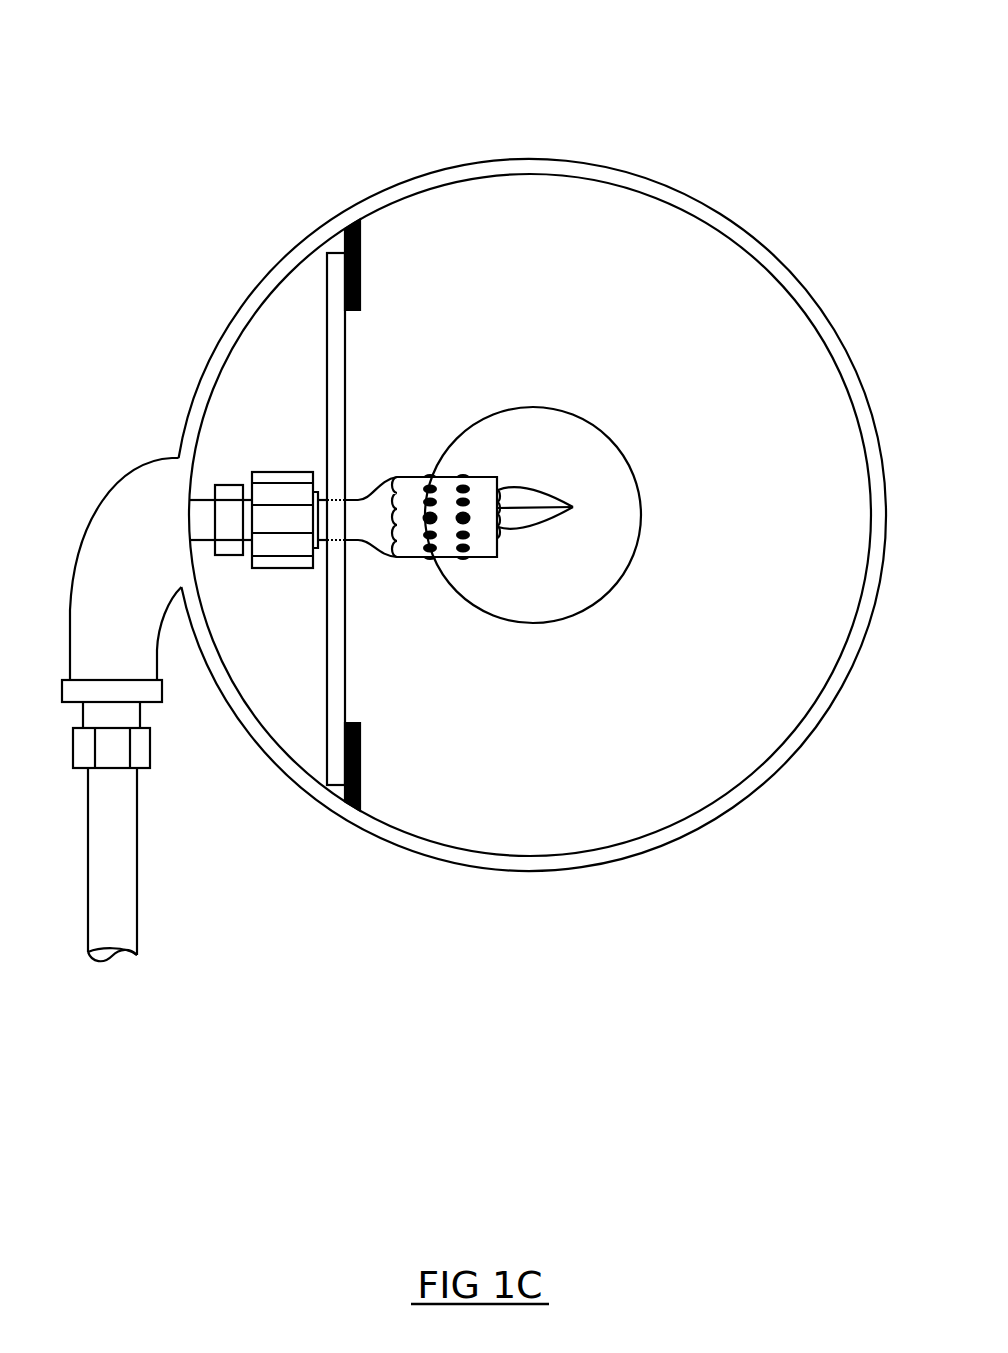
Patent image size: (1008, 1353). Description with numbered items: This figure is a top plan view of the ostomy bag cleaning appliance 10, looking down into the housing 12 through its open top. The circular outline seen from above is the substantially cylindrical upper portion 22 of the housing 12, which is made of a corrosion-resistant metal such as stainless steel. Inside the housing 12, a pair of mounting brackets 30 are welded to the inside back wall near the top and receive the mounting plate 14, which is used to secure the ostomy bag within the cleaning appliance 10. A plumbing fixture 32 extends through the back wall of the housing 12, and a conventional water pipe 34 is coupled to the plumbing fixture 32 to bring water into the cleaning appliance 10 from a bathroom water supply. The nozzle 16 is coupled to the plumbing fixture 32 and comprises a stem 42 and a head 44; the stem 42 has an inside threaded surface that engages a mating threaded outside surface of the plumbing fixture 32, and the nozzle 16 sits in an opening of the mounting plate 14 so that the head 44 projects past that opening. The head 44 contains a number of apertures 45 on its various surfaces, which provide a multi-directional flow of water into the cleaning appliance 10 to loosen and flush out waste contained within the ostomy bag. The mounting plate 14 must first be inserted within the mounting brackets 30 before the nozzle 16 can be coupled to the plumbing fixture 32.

The ostomy bag cleaning appliance 10 is at (692, 112).
The housing 12 is at (588, 882).
The mounting plate 14 is at (355, 358).
The nozzle 16 is at (478, 466).
The upper portion 22 is at (733, 798).
The mounting brackets 30 is at (359, 262).
The plumbing fixture 32 is at (137, 500).
The water pipe 34 is at (117, 897).
The stem 42 is at (365, 525).
The head 44 is at (483, 545).
The apertures 45 is at (464, 477).